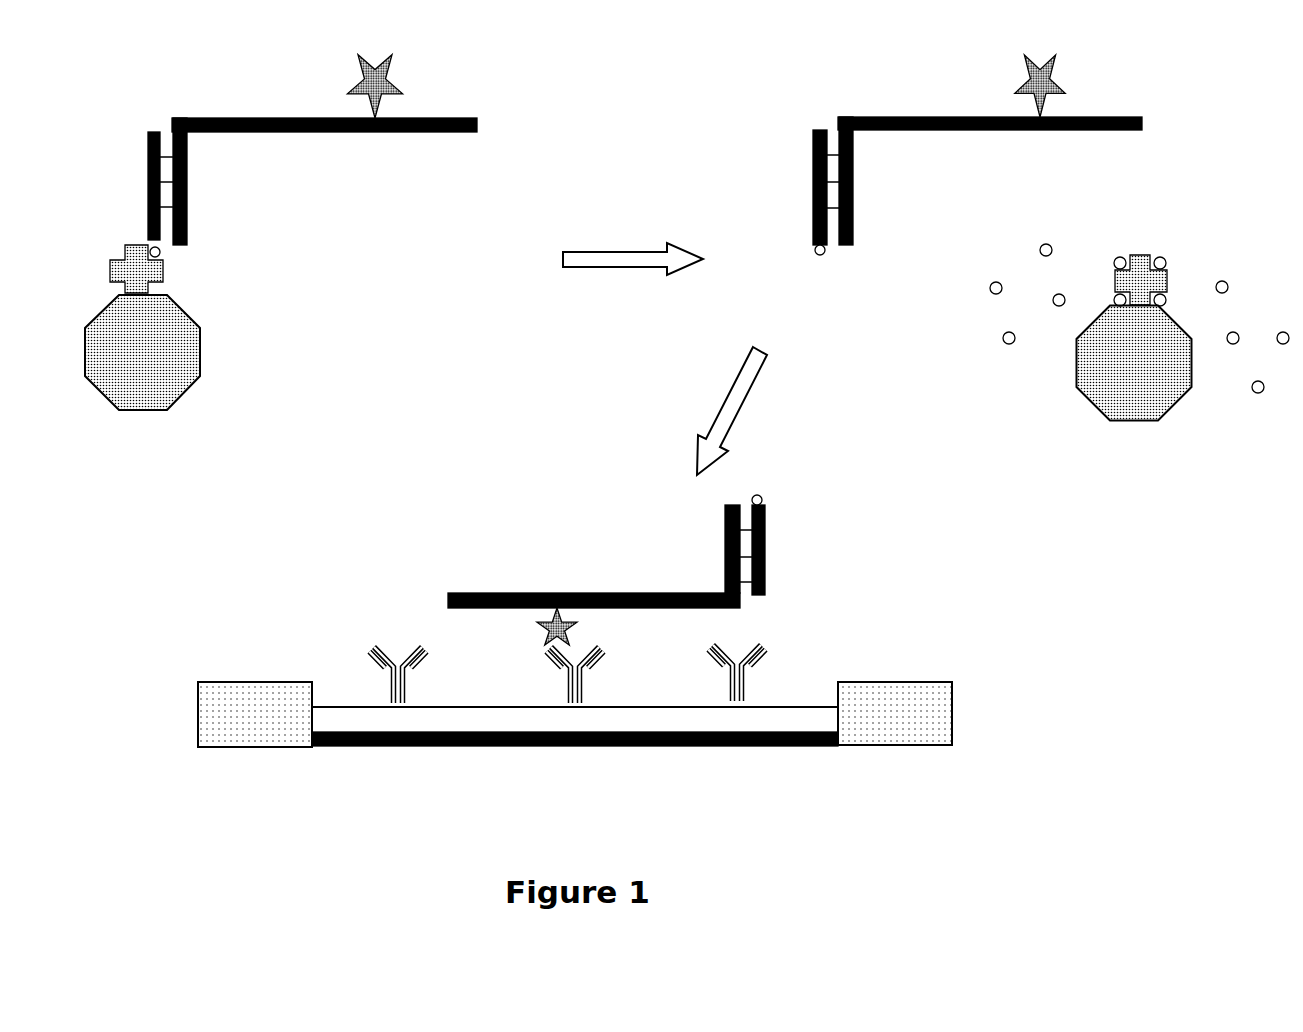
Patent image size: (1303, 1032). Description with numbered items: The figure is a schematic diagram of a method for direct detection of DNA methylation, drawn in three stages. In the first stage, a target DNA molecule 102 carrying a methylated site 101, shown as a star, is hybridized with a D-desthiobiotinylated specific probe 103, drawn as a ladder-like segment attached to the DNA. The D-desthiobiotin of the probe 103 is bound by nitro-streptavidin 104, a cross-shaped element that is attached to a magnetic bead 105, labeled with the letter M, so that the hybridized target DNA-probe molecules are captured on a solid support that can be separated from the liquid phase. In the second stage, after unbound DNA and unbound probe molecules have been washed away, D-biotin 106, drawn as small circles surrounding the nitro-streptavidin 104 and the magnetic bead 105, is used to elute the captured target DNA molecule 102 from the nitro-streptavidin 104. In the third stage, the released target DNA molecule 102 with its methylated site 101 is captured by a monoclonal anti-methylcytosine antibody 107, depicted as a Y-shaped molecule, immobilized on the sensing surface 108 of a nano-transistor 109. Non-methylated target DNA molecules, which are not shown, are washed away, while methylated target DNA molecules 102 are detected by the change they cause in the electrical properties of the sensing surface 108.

The methylated site 101 is at (408, 65).
The target DNA molecule 102 is at (323, 153).
The D-desthiobiotinylated specific probe 103 is at (130, 179).
The nitro-streptavidin 104 is at (196, 270).
The magnetic bead 105 is at (221, 357).
The D-biotin 106 is at (980, 343).
The monoclonal anti-methylcytosine antibody 107 is at (369, 637).
The sensing surface 108 is at (819, 685).
The nano-transistor 109 is at (563, 766).